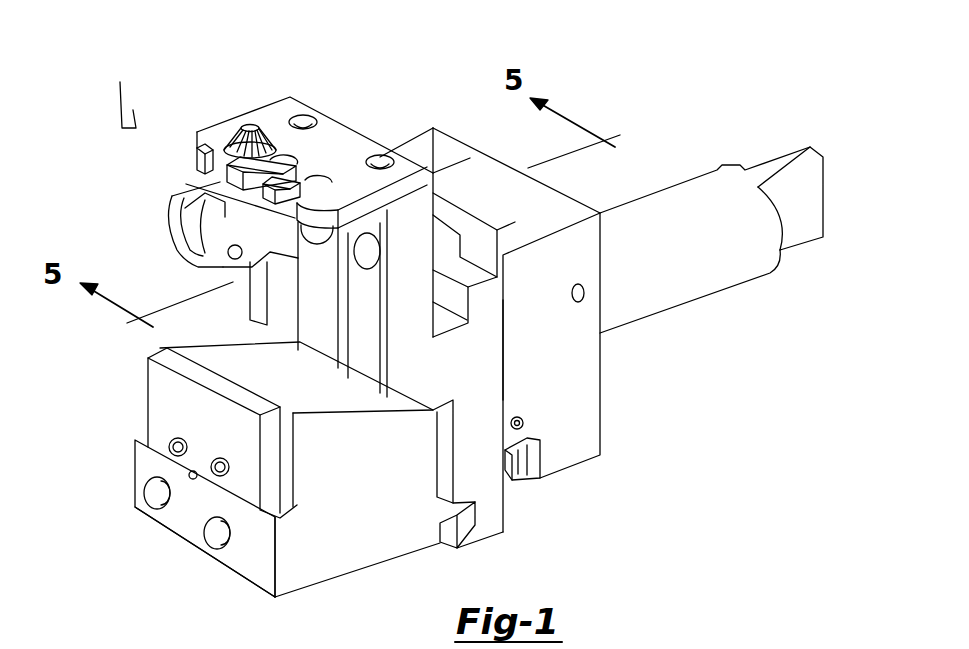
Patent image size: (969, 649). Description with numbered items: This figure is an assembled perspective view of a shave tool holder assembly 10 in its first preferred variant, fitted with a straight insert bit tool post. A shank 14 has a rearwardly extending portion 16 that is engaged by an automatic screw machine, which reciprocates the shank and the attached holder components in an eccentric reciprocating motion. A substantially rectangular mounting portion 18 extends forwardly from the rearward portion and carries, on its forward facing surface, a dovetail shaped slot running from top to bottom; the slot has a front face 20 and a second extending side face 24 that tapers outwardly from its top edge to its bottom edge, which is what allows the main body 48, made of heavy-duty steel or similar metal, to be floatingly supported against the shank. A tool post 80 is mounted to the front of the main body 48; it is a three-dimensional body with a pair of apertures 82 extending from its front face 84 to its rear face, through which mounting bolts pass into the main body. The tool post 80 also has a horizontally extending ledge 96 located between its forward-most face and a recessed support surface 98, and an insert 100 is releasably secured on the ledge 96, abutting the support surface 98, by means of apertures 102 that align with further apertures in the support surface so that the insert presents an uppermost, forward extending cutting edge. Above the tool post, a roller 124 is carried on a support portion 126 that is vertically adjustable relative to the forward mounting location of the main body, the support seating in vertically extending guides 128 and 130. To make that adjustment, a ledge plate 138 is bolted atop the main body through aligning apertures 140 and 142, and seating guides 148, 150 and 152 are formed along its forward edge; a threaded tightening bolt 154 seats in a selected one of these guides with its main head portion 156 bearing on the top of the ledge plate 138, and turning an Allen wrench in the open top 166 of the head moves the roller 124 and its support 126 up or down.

The shave tool holder assembly 10 is at (112, 91).
The shank 14 is at (680, 157).
The rearwardly extending portion 16 is at (688, 288).
The mounting portion 18 is at (443, 155).
The front face 20 is at (452, 212).
The second extending side face 24 is at (477, 215).
The main body 48 is at (468, 360).
The tool post 80 is at (410, 577).
The apertures 82 is at (160, 500).
The front face 84 is at (263, 568).
The ledge 96 is at (288, 518).
The support surface 98 is at (292, 455).
The insert 100 is at (173, 400).
The apertures 102 is at (220, 460).
The roller 124 is at (185, 250).
The support portion 126 is at (185, 195).
The guide 128 is at (252, 304).
The guide 130 is at (372, 352).
The ledge plate 138 is at (358, 150).
The aperture 140 is at (306, 98).
The aperture 142 is at (380, 153).
The seating guide 148 is at (205, 162).
The seating guide 150 is at (278, 160).
The seating guide 152 is at (300, 187).
The threaded tightening bolt 154 is at (223, 125).
The main head portion 156 is at (197, 132).
The open top 166 is at (258, 120).